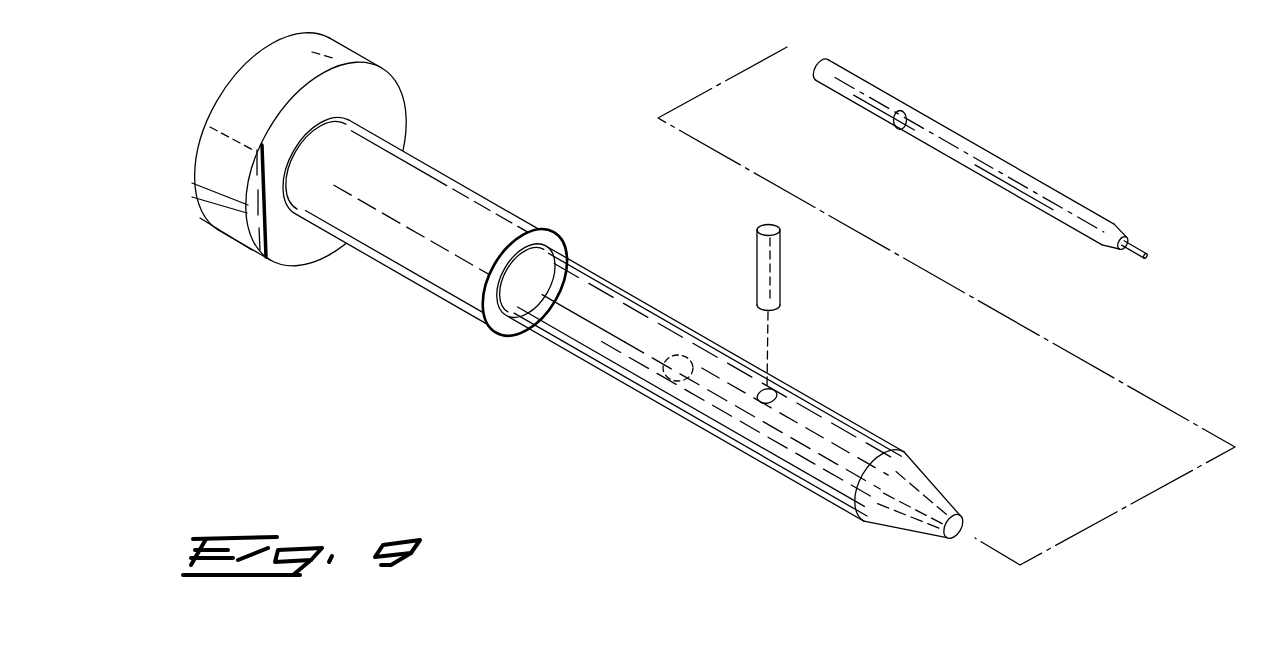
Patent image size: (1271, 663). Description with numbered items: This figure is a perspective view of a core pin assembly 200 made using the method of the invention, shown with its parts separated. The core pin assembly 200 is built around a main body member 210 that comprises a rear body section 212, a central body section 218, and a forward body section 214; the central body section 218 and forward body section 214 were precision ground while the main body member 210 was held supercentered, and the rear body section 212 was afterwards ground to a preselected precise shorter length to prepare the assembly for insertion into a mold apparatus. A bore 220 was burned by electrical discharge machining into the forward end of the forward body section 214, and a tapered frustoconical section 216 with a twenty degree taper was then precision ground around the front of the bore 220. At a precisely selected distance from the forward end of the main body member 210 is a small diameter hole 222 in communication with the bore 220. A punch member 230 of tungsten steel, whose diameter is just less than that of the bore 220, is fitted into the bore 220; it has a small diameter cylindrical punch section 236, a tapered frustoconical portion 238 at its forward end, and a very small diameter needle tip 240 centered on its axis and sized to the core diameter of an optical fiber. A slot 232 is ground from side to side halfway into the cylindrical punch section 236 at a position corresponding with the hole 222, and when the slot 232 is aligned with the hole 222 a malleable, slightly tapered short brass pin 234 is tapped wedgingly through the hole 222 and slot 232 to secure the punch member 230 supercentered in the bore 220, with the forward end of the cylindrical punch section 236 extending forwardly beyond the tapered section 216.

The core pin assembly 200 is at (551, 106).
The main body member 210 is at (617, 413).
The rear body section 212 is at (226, 240).
The forward body section 214 is at (537, 341).
The tapered frustoconical section 216 is at (886, 532).
The central body section 218 is at (410, 282).
The bore 220 is at (951, 538).
The hole 222 is at (779, 391).
The punch member 230 is at (1050, 146).
The slot 232 is at (895, 131).
The brass pin 234 is at (778, 288).
The cylindrical punch section 236 is at (862, 75).
The tapered frustoconical portion 238 is at (1128, 232).
The needle tip 240 is at (1150, 256).